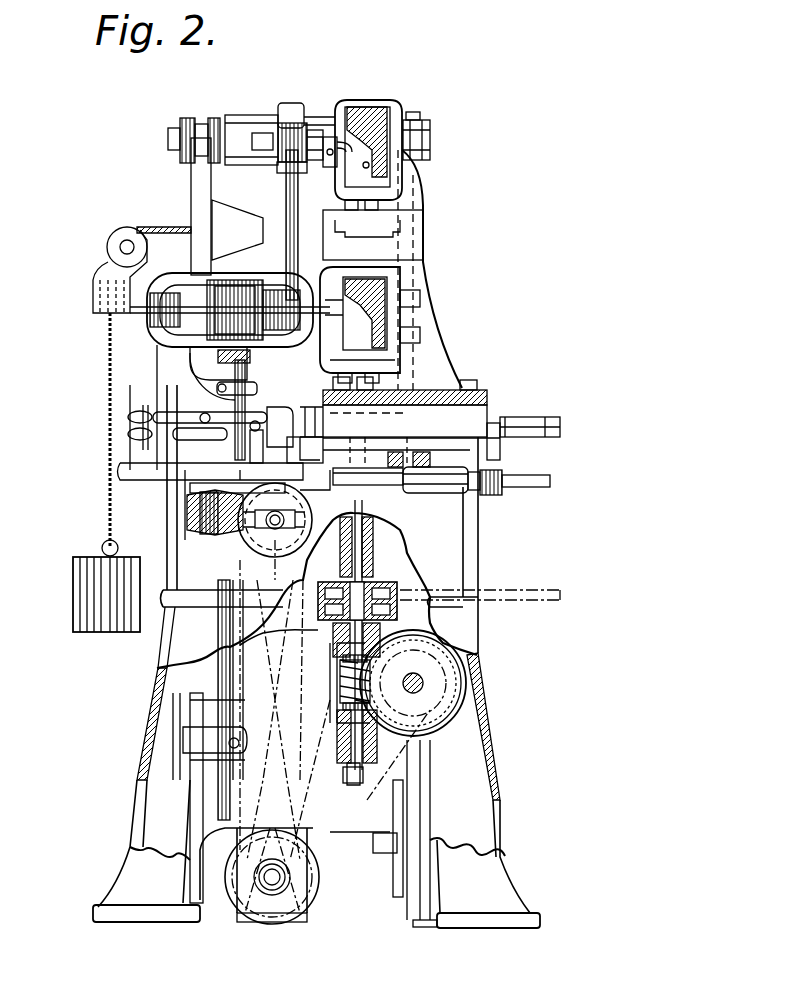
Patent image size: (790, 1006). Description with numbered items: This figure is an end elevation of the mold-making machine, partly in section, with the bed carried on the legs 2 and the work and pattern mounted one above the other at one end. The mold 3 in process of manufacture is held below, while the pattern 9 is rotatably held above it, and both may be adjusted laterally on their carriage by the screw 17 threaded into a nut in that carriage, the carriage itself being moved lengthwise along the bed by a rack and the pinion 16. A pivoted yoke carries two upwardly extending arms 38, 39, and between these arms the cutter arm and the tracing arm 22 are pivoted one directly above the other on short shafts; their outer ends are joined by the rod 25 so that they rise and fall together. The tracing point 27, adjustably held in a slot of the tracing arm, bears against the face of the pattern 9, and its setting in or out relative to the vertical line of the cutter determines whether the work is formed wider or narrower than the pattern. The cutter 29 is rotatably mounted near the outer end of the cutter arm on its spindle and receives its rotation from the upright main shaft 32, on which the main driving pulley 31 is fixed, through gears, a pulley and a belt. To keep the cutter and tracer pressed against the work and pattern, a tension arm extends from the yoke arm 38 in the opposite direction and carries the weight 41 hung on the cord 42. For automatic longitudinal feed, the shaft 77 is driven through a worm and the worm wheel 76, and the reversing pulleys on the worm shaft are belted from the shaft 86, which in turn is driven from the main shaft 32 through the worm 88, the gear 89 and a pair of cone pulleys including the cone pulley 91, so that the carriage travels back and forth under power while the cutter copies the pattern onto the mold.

The legs 2 is at (498, 782).
The mold 3 is at (380, 273).
The pattern 9 is at (377, 110).
The pinion 16 is at (408, 487).
The screw 17 is at (518, 417).
The tracing arm 22 is at (287, 107).
The rod 25 is at (285, 200).
The tracing point 27 is at (353, 143).
The cutter 29 is at (350, 326).
The main driving pulley 31 is at (395, 590).
The main shaft 32 is at (370, 540).
The yoke arm 38 is at (191, 192).
The yoke arm 39 is at (432, 136).
The weight 41 is at (70, 615).
The cord 42 is at (107, 457).
The worm wheel 76 is at (274, 550).
The shaft 77 is at (366, 485).
The shaft 86 is at (285, 880).
The worm 88 is at (338, 672).
The gear 89 is at (387, 662).
The cone pulley 91 is at (233, 897).